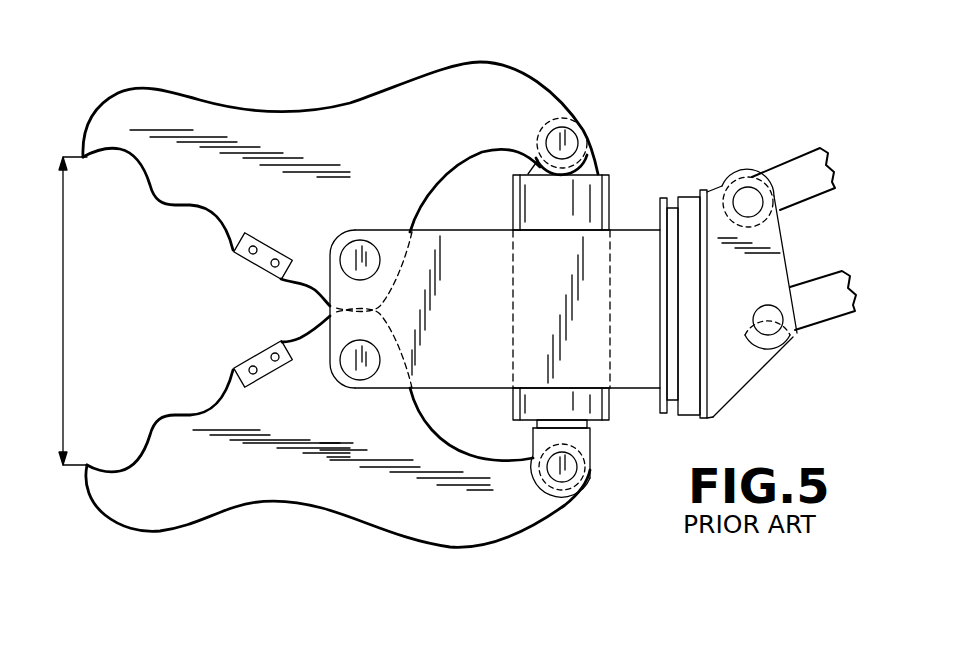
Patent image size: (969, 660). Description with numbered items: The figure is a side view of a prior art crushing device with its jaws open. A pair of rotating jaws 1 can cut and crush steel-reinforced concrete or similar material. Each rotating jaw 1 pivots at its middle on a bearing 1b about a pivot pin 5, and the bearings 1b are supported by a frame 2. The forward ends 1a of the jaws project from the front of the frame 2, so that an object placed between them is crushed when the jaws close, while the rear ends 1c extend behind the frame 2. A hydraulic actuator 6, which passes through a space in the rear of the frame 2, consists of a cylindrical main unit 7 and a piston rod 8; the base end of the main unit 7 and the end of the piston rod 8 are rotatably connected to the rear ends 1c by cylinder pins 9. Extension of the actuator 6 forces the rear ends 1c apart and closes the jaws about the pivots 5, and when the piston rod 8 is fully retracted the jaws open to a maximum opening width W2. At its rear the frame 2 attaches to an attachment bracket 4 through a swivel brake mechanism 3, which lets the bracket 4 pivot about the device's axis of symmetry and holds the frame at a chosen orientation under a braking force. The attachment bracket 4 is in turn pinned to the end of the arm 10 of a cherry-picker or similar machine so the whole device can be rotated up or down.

The rotating jaw 1 is at (132, 88).
The end of rotatable jaw 1a is at (166, 95).
The bearing 1b is at (340, 232).
The rear end of rotatable jaw 1c is at (497, 78).
The frame 2 is at (500, 233).
The swivel brake mechanism 3 is at (675, 215).
The attachment bracket 4 is at (744, 380).
The pivot pin 5 is at (375, 253).
The hydraulic actuator 6 is at (616, 199).
The cylindrical main unit 7 is at (610, 198).
The piston rod 8 is at (580, 424).
The cylinder pin 9 is at (572, 135).
The rotatable jaw of cherry-picker 10 is at (826, 325).
The maximum opening width W2 is at (69, 311).